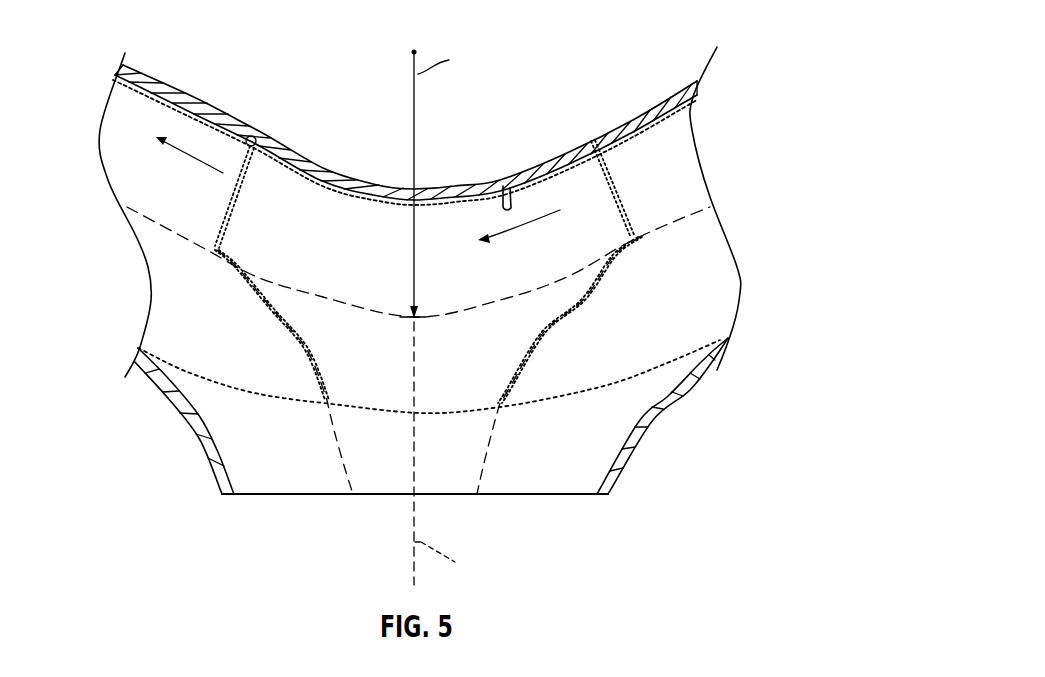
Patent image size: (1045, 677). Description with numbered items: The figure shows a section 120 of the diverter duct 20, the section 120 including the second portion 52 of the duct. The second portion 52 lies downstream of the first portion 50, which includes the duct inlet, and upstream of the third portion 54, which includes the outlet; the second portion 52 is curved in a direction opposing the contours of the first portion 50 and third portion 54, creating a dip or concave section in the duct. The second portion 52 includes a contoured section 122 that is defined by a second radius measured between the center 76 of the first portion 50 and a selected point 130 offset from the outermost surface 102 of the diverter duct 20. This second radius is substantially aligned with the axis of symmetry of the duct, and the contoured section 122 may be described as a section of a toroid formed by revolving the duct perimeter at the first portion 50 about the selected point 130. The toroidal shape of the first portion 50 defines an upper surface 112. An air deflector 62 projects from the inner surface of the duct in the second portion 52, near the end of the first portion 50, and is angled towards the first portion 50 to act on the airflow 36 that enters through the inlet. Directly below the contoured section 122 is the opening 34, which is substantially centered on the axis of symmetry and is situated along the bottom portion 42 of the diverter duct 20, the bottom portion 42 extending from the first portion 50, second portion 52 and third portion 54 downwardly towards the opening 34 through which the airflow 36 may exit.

The diverter duct 20 is at (740, 241).
The opening 34 is at (342, 500).
The airflow 36 is at (323, 223).
The bottom portion 42 is at (591, 440).
The first portion 50 is at (701, 281).
The second portion 52 is at (569, 262).
The third portion 54 is at (163, 191).
The air deflector 62 is at (521, 196).
The center 76 is at (423, 316).
The outermost surface 102 is at (190, 93).
The upper surface 112 is at (248, 134).
The section 120 is at (474, 160).
The contoured section 122 is at (455, 226).
The selected point 130 is at (412, 52).